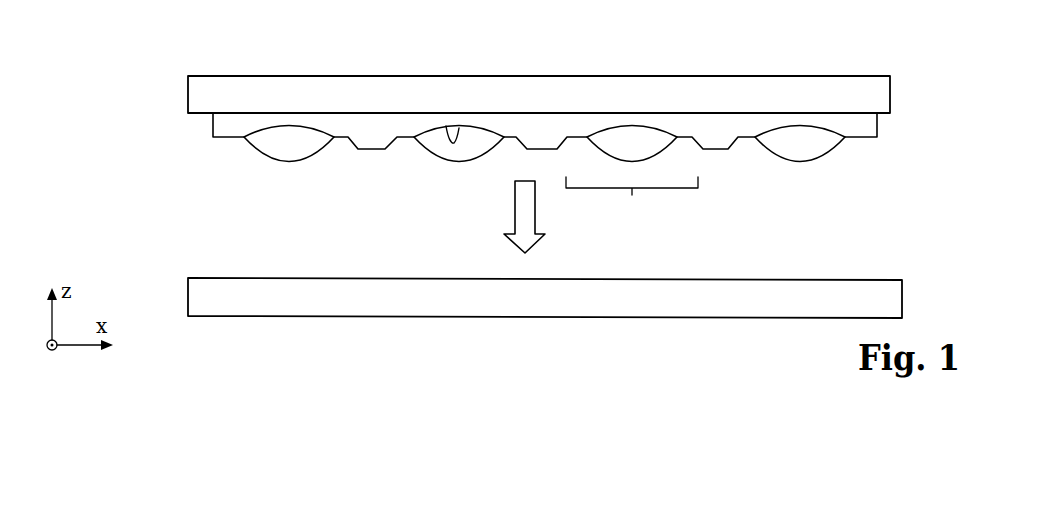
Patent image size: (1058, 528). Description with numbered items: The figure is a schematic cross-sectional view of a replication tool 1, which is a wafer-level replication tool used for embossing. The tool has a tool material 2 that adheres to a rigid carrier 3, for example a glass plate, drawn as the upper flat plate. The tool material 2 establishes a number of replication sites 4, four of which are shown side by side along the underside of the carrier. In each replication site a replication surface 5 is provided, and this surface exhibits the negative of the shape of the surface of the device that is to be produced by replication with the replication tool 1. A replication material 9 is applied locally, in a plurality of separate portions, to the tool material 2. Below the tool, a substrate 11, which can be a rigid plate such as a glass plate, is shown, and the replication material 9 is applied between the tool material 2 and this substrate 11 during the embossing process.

The replication tool 1 is at (150, 51).
The tool material 2 is at (230, 122).
The rigid carrier 3 is at (667, 87).
The replication sites 4 is at (632, 203).
The replication surface 5 is at (454, 141).
The replication material 9 is at (277, 147).
The substrate 11 is at (217, 298).